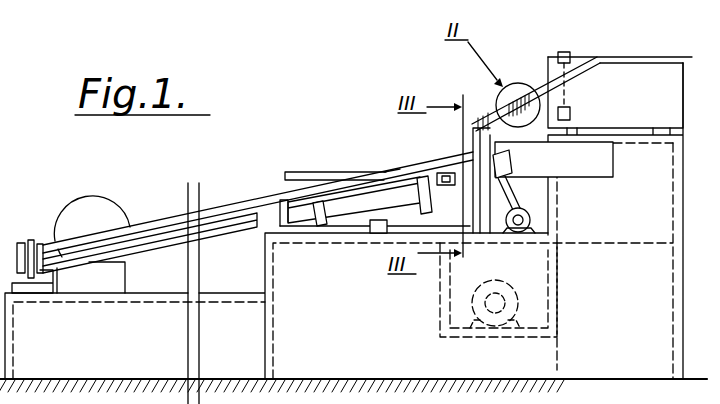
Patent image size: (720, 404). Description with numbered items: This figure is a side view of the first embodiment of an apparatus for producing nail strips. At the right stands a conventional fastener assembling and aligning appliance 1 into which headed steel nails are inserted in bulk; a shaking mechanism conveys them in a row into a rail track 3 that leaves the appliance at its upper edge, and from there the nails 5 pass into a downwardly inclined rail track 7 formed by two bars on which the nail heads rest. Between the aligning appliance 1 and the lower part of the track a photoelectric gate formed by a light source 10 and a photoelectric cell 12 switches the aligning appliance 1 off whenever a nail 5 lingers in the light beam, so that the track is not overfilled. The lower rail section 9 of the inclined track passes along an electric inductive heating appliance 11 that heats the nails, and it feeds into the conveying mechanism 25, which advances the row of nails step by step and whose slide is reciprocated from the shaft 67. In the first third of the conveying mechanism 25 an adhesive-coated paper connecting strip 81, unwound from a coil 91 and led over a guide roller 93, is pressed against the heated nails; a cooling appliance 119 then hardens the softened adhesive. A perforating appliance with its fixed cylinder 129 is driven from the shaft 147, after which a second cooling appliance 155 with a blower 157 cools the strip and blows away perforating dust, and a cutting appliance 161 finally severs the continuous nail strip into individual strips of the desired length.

The fastener assembling and aligning appliance 1 is at (658, 68).
The rail track 3 is at (617, 56).
The nails 5 is at (566, 91).
The downwardly inclined rail track 7 is at (545, 85).
The lower rail section 9 is at (472, 153).
The light source 10 is at (565, 52).
The electric inductive heating appliance 11 is at (583, 170).
The photoelectric cell 12 is at (572, 113).
The conveying mechanism 25 is at (356, 218).
The shaft 67 is at (520, 197).
The connecting strip 81 is at (394, 171).
The coil 91 is at (303, 172).
The guide roller 93 is at (452, 186).
The cooling appliance 119 is at (342, 198).
The cylinder 129 is at (281, 200).
The shaft 147 is at (519, 233).
The second cooling appliance 155 is at (160, 216).
The blower 157 is at (90, 197).
The cutting appliance 161 is at (30, 240).